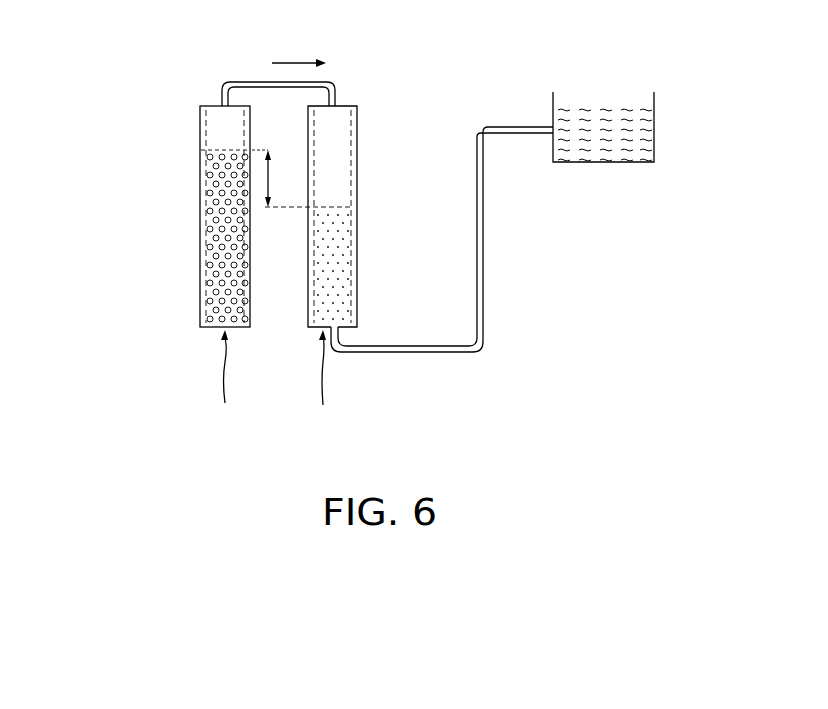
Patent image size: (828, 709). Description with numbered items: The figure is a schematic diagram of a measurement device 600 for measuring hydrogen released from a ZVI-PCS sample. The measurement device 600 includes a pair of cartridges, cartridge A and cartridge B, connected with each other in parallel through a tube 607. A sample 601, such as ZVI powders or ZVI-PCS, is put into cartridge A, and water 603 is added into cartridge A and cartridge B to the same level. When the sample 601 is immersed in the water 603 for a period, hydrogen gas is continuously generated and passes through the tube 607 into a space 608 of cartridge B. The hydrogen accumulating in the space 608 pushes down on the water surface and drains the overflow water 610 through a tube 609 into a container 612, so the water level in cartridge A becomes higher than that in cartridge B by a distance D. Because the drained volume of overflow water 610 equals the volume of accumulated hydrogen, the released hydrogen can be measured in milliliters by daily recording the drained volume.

The measurement device 600 is at (136, 70).
The sample 601 is at (202, 272).
The water 603 is at (200, 153).
The tube 607 is at (341, 80).
The space 608 is at (349, 146).
The tube 609 is at (487, 243).
The overflow water 610 is at (618, 152).
The container 612 is at (655, 99).